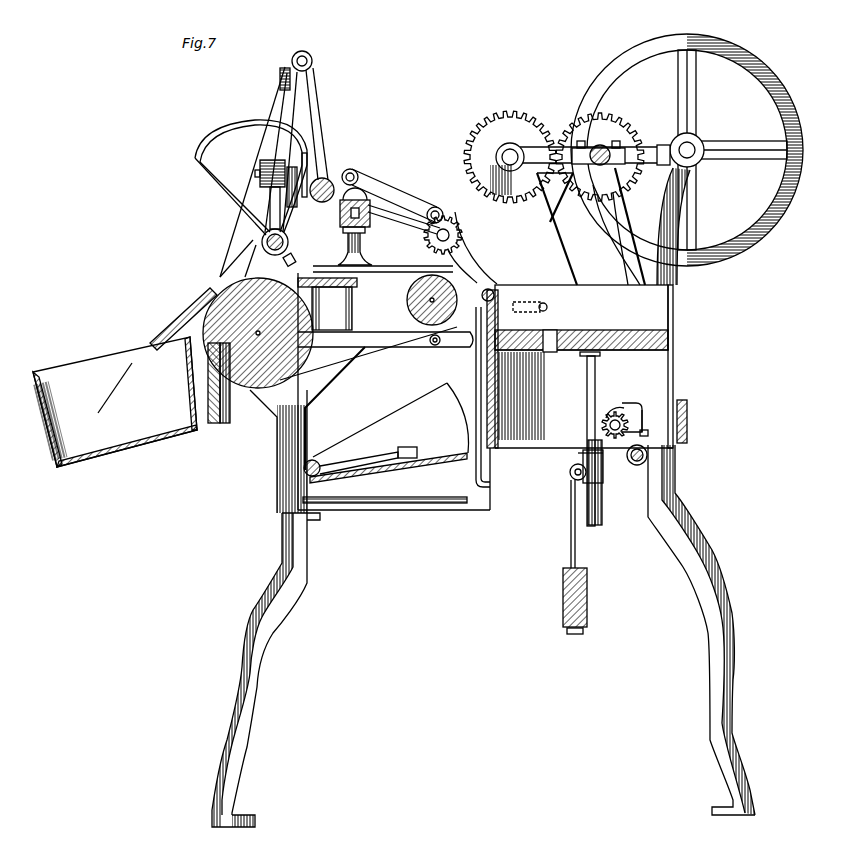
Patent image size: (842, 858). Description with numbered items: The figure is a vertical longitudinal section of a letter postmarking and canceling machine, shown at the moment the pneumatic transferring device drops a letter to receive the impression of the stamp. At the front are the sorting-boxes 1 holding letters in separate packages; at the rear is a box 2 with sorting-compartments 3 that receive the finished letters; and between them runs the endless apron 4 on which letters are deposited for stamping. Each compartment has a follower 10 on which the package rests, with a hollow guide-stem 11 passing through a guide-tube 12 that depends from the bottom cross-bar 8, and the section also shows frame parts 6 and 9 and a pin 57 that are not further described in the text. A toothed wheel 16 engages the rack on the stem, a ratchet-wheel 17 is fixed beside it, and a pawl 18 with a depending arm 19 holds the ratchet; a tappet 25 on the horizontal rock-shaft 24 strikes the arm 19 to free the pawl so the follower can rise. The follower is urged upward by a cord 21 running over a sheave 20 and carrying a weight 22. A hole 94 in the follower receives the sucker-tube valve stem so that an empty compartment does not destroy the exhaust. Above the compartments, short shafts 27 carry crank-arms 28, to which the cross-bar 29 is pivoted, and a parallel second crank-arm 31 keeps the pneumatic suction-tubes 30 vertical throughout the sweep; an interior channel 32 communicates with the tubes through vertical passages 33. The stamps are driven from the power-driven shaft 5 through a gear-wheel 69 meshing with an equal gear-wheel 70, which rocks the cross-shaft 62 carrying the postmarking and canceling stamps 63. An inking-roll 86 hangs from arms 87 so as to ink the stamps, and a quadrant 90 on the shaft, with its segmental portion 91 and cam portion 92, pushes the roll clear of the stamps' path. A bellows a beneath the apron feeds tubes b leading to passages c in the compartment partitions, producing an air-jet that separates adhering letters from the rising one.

The sorting-boxes 1 is at (483, 497).
The box 2 is at (128, 456).
The sorting-compartments 3 is at (115, 402).
The endless apron 4 is at (385, 384).
The power-driven shaft 5 is at (591, 146).
The guide bar 6 is at (593, 369).
The bottom cross-bar 8 is at (414, 367).
The hopper arm 9 is at (228, 400).
The follower 10 is at (581, 333).
The hollow guide-stem 11 is at (594, 439).
The guide-tube 12 is at (583, 453).
The toothed wheel 16 is at (610, 411).
The ratchet-wheel 17 is at (615, 425).
The pawl 18 is at (631, 404).
The depending arm 19 is at (652, 420).
The sheave 20 is at (567, 471).
The cord 21 is at (571, 531).
The weight 22 is at (586, 601).
The horizontal rock-shaft 24 is at (636, 465).
The tappet 25 is at (654, 436).
The short shafts 27 is at (430, 240).
The crank-arms 28 is at (404, 220).
The cross-bar 29 is at (343, 224).
The pneumatic suction-tubes 30 is at (335, 249).
The second crank-arm 31 is at (392, 196).
The interior channel 32 is at (362, 232).
The vertical passages 33 is at (327, 304).
The pin 57 is at (492, 286).
The cross-shaft 62 is at (288, 244).
The postmarking and canceling stamps 63 is at (309, 175).
The gear-wheel 69 is at (600, 157).
The gear-wheel 70 is at (510, 157).
The inking-roll 86 is at (319, 195).
The arms 87 is at (319, 124).
The quadrant 90 is at (240, 172).
The segmental portion 91 is at (251, 171).
The cam portion 92 is at (304, 138).
The hole 94 is at (554, 341).
The bellows a is at (386, 433).
The tubes b is at (397, 397).
The passages c is at (535, 302).